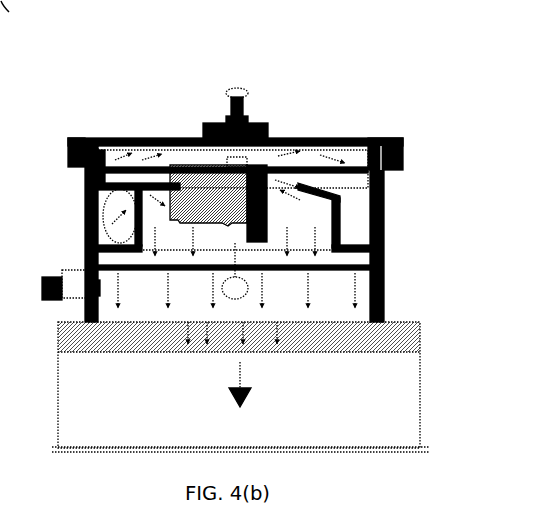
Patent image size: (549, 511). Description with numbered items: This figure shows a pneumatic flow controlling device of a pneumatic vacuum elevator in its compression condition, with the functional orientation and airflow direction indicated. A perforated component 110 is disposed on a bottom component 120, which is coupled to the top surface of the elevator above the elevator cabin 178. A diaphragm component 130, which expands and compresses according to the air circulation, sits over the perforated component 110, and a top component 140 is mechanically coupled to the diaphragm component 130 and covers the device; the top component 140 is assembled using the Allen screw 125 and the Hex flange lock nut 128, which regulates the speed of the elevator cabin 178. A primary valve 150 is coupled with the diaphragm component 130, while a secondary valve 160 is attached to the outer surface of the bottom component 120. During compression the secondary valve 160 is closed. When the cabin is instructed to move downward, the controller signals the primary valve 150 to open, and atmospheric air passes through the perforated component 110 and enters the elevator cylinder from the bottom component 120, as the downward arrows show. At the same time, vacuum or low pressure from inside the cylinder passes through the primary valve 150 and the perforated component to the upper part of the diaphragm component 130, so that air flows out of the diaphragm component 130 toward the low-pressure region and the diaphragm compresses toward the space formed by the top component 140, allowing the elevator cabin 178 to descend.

The perforated component 110 is at (378, 224).
The bottom component 120 is at (340, 222).
The Allen screw 125 is at (234, 86).
The Hex flange lock nut 128 is at (246, 124).
The diaphragm component 130 is at (92, 167).
The top component 140 is at (400, 142).
The primary valve 150 is at (193, 200).
The secondary valve 160 is at (67, 286).
The elevator cabin 178 is at (308, 400).